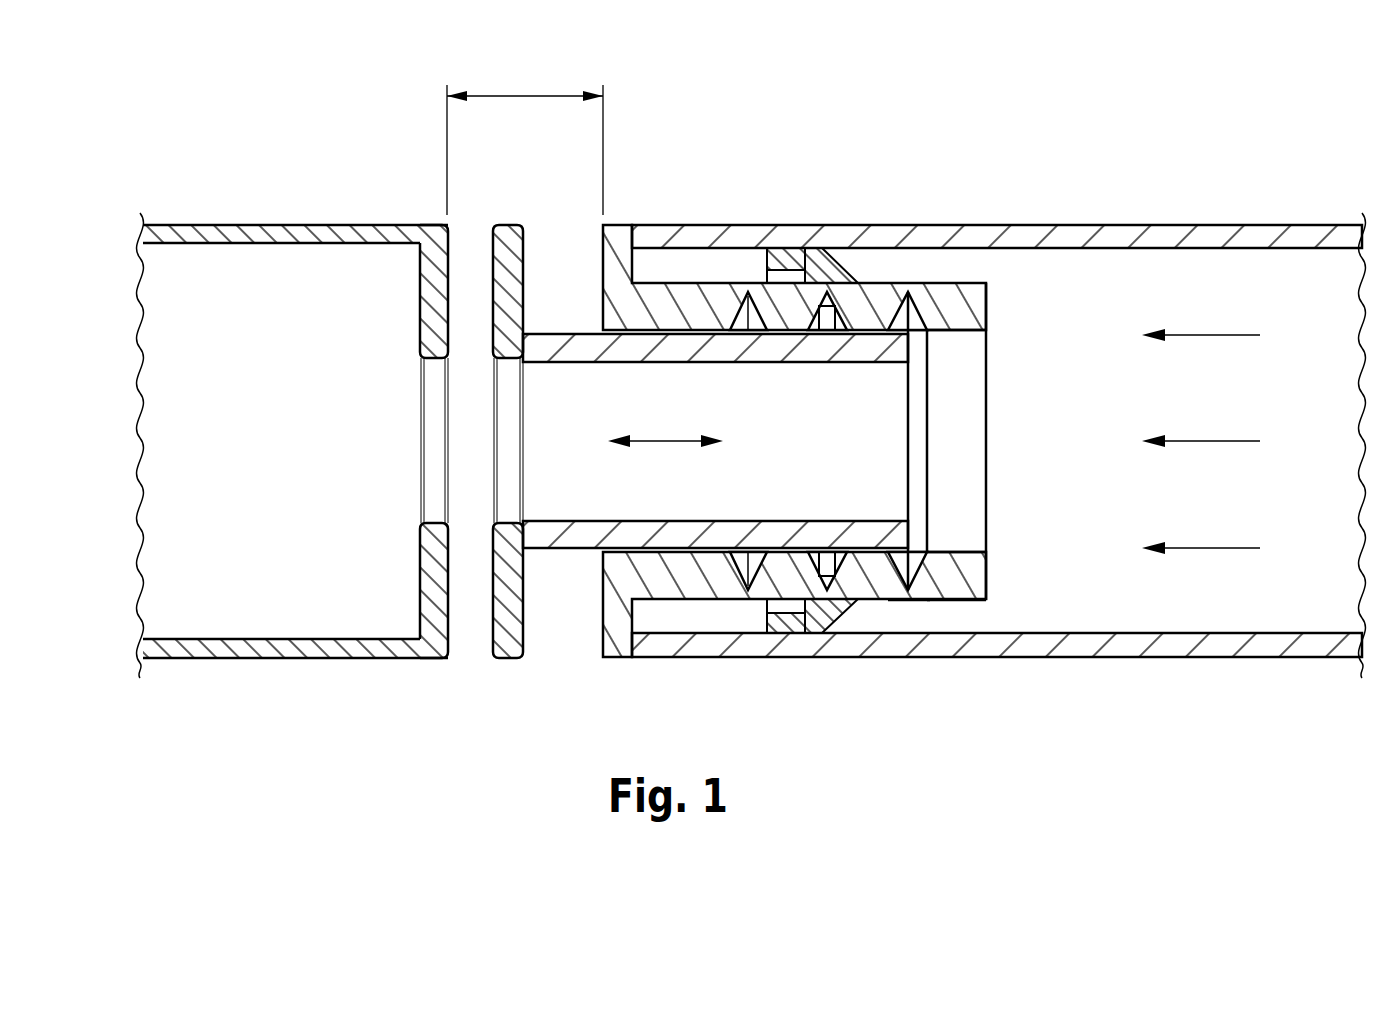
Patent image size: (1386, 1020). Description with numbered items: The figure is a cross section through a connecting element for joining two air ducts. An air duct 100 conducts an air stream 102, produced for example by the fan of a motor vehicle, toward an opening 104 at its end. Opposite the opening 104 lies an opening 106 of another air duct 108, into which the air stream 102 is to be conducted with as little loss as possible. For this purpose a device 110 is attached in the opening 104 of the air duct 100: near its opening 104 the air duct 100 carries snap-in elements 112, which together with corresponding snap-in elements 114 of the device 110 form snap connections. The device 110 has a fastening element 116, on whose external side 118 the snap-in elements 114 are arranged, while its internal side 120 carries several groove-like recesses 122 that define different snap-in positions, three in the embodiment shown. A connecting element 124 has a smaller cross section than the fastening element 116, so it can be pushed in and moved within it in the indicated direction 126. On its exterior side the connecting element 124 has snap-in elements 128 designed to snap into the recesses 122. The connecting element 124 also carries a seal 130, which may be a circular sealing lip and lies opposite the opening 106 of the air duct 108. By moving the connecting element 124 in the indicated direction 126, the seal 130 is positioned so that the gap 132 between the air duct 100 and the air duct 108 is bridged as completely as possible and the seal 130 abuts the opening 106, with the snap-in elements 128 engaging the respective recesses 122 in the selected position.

The air duct 100 is at (1113, 238).
The air stream 102 is at (1235, 316).
The opening 104 is at (640, 262).
The opening 106 is at (455, 388).
The air duct 108 is at (270, 232).
The device 110 is at (995, 300).
The snap-in element 112 is at (782, 262).
The snap-in element 114 is at (836, 262).
The fastening element 116 is at (972, 600).
The external side 118 is at (930, 600).
The internal side 120 is at (958, 552).
The groove-like recess 122 is at (747, 296).
The connecting element 124 is at (885, 347).
The indicated direction 126 is at (667, 438).
The snap-in element 128 is at (827, 555).
The seal 130 is at (507, 640).
The gap 132 is at (530, 94).